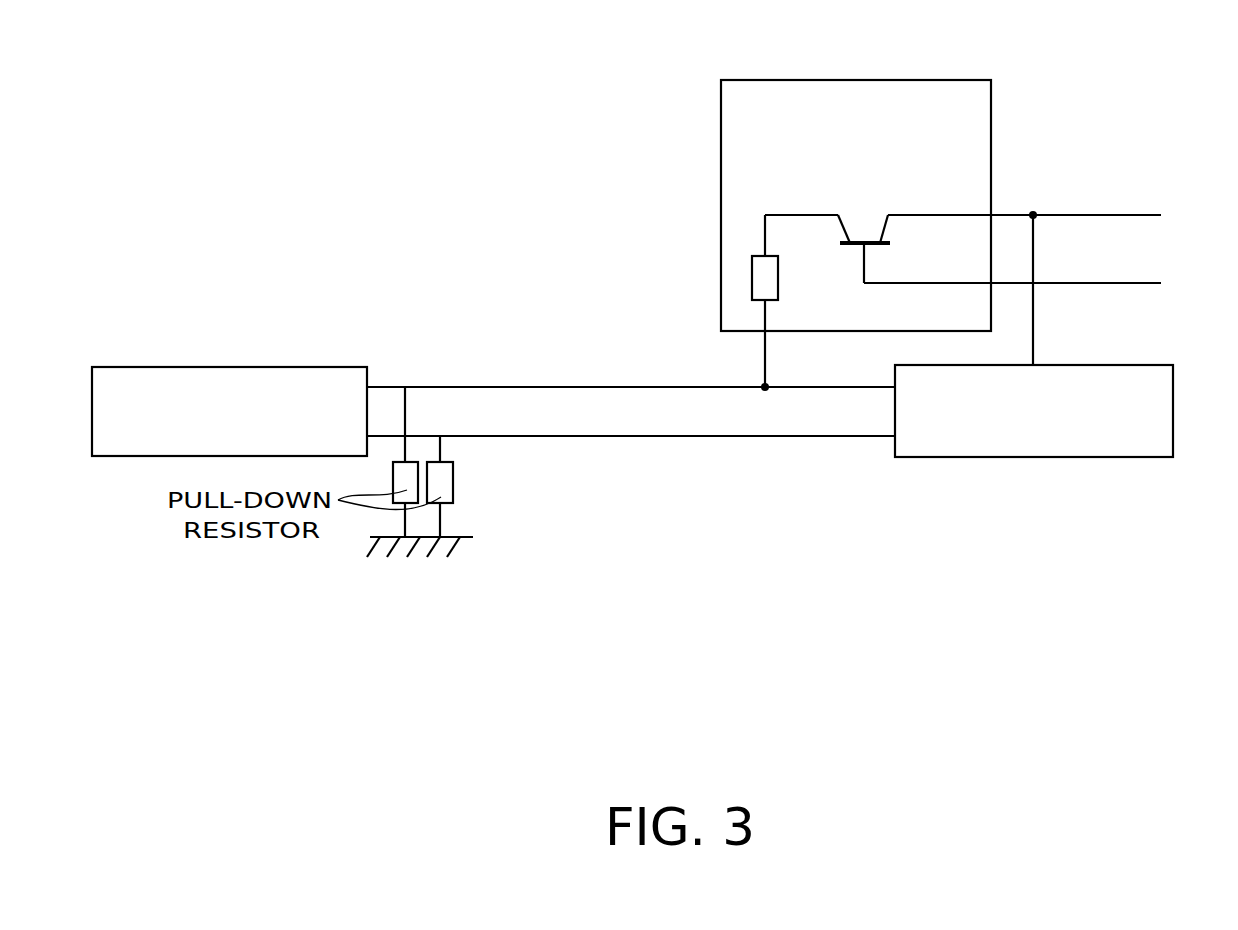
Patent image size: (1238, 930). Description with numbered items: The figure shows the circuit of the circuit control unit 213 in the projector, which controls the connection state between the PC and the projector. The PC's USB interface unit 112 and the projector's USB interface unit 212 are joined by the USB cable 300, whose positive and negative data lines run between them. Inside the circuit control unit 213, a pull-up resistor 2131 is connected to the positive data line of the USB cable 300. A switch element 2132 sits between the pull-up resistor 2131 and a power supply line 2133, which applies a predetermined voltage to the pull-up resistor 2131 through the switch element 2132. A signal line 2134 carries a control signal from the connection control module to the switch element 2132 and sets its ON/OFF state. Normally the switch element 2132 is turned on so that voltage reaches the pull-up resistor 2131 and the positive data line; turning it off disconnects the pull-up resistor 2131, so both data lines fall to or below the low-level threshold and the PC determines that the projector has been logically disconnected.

The USB interface unit 112 is at (252, 367).
The USB interface unit 212 is at (1093, 365).
The circuit control unit 213 is at (941, 80).
The pull-up resistor 2131 is at (752, 282).
The switch element 2132 is at (866, 227).
The power supply line 2133 is at (1127, 190).
The signal line 2134 is at (1127, 258).
The USB cable 300 is at (607, 460).